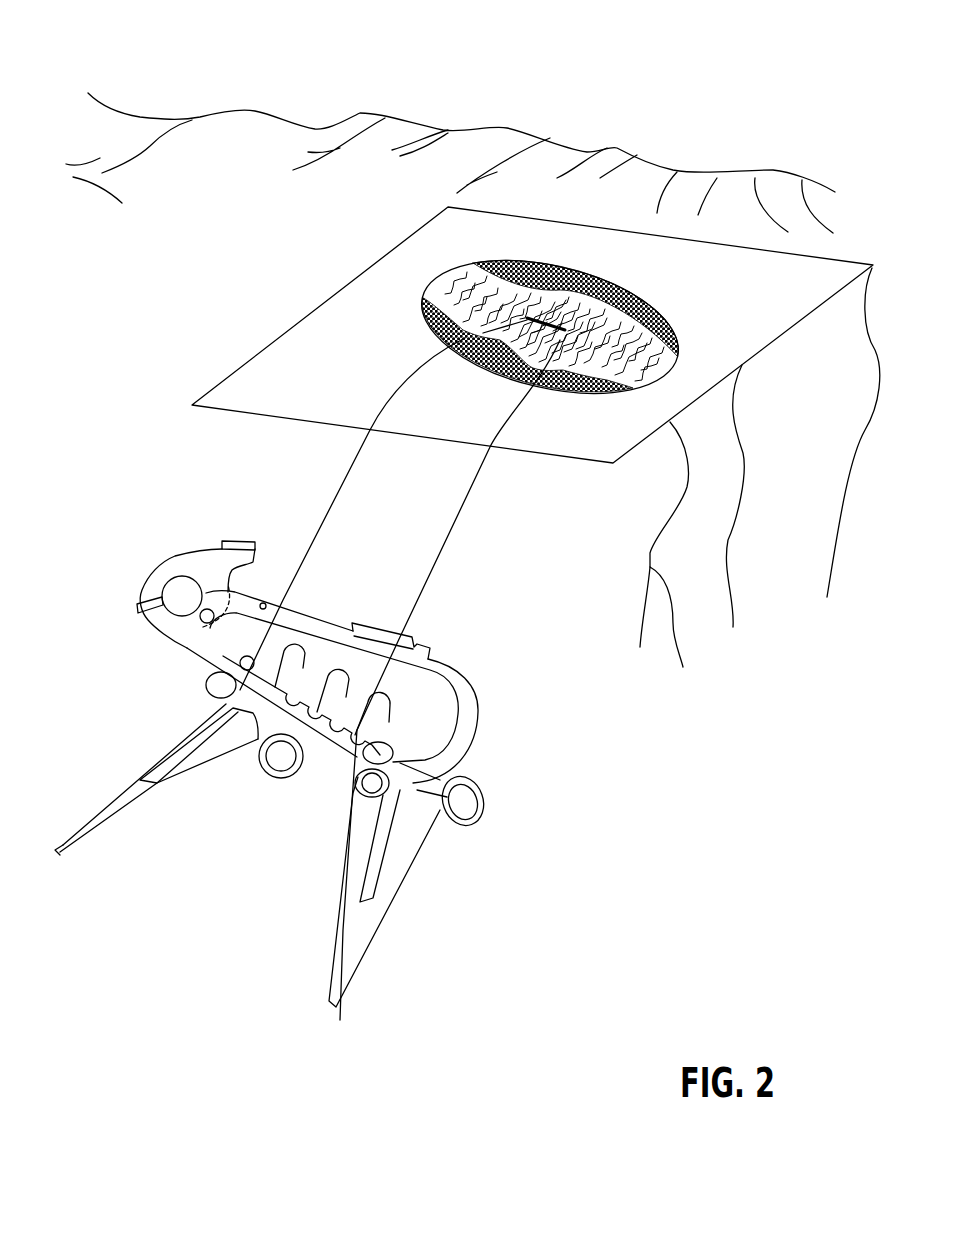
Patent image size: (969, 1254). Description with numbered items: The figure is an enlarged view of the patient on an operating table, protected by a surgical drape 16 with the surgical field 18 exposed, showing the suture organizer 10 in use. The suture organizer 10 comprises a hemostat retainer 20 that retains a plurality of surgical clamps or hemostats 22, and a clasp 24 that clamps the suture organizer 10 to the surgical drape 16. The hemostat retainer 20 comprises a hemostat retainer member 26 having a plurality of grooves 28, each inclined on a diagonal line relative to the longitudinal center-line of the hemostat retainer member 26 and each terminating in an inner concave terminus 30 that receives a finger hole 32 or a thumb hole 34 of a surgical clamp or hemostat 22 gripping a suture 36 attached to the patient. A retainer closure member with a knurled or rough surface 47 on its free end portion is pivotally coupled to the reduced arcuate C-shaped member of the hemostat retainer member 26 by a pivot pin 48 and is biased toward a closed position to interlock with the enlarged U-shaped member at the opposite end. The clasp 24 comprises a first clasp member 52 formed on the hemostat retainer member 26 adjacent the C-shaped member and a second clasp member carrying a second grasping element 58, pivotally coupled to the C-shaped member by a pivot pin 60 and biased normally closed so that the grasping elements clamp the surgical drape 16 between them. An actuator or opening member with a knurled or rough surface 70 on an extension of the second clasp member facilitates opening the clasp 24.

The suture organizer 10 is at (357, 721).
The surgical drape 16 is at (410, 123).
The surgical field 18 is at (597, 278).
The hemostat retainer 20 is at (433, 622).
The surgical clamp or hemostat 22 is at (130, 767).
The clasp 24 is at (159, 570).
The hemostat retainer member 26 is at (296, 752).
The groove 28 is at (277, 683).
The inner concave terminus 30 is at (259, 750).
The finger hole 32 is at (222, 703).
The thumb hole 34 is at (280, 760).
The suture 36 is at (310, 557).
The knurled or rough surface 47 is at (377, 633).
The pivot pin 48 is at (264, 603).
The first clasp member 52 is at (137, 630).
The second grasping element 58 is at (140, 563).
The pivot pin 60 is at (210, 625).
The knurled or rough surface 70 is at (233, 540).